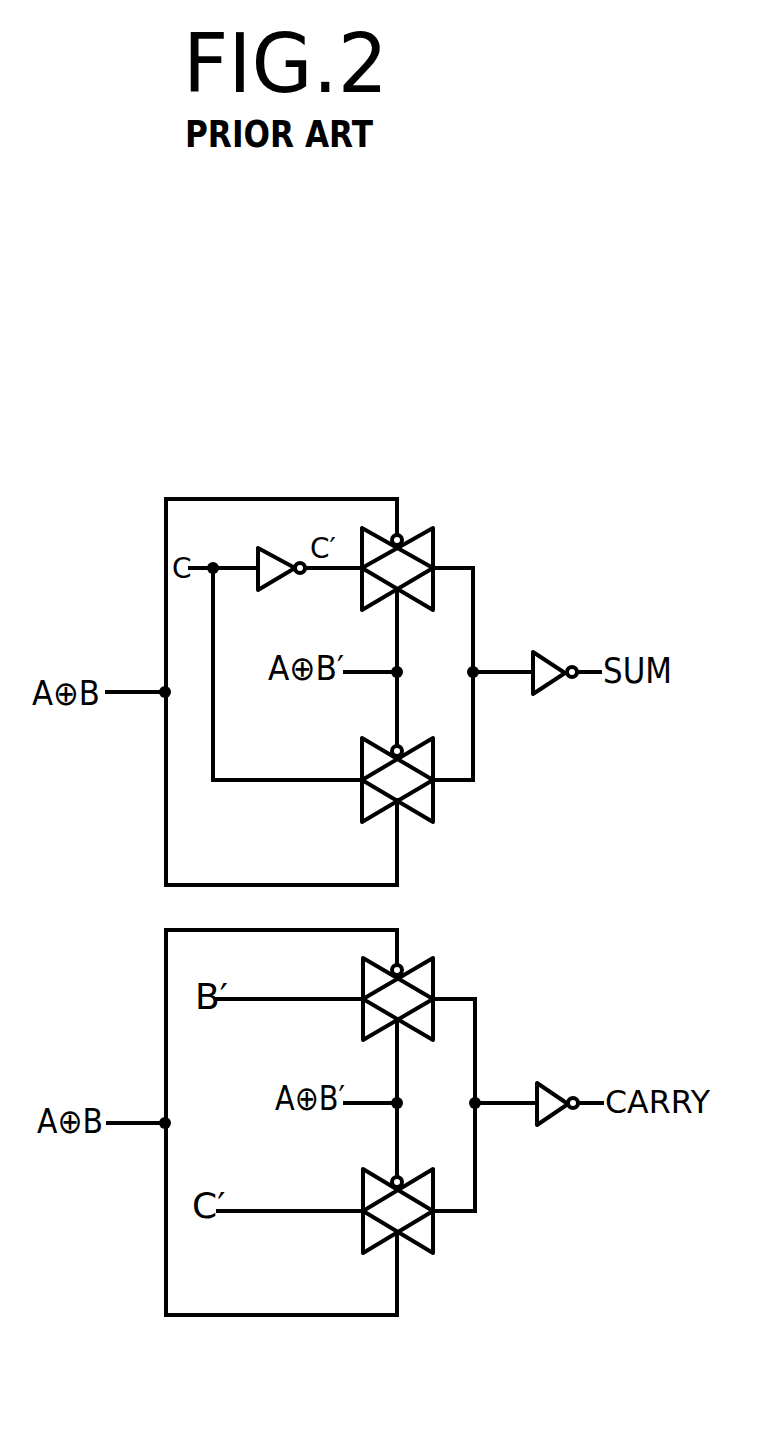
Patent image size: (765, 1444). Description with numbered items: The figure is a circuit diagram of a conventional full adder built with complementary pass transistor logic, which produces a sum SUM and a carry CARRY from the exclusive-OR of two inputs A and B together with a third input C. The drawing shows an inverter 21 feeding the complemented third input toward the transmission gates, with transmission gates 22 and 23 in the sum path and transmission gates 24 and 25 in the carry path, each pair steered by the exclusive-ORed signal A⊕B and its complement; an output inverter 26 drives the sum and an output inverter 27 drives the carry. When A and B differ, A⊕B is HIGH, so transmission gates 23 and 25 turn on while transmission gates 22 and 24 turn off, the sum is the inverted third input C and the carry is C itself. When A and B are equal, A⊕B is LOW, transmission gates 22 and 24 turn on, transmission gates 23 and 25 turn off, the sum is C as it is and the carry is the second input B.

The inverter 21 is at (272, 547).
The transmission gate 22 is at (425, 544).
The transmission gate 23 is at (423, 798).
The transmission gate 24 is at (423, 973).
The transmission gate 25 is at (428, 1238).
The output inverter (SUM) 26 is at (537, 653).
The output inverter (CARRY) 27 is at (550, 1087).